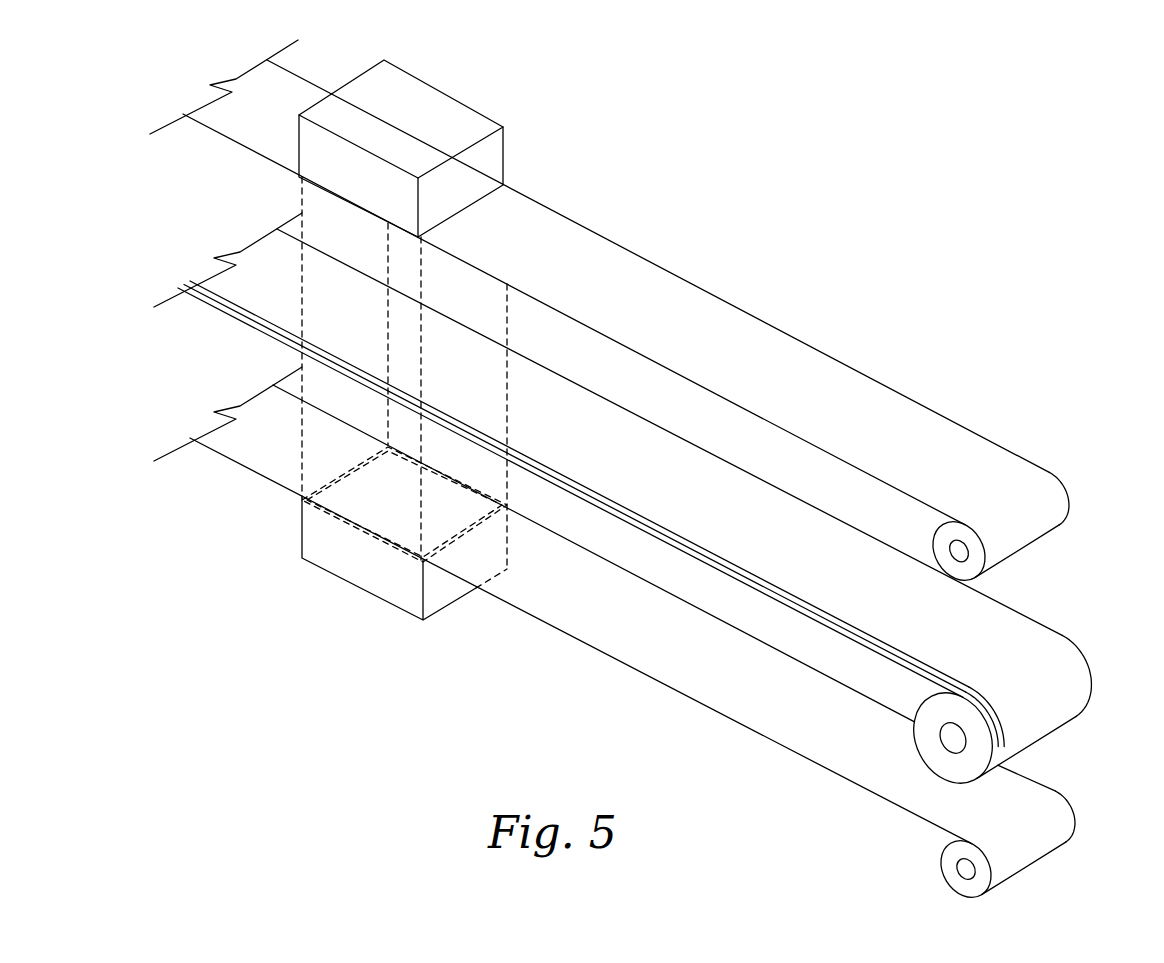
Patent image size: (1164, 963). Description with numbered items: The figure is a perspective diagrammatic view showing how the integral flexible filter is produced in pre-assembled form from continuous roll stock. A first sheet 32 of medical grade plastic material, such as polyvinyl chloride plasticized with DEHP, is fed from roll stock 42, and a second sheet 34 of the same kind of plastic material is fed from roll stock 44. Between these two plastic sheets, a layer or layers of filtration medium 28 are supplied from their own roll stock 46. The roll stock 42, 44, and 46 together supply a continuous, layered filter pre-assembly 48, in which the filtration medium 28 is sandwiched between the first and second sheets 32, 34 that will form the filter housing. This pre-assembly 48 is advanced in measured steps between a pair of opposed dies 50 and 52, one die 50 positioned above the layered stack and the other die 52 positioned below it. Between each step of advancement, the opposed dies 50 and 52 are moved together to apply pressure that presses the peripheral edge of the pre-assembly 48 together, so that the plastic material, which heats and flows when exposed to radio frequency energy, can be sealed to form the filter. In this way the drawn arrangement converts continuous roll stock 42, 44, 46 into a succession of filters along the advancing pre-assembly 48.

The filtration medium 28 is at (593, 443).
The first sheet 32 is at (790, 370).
The second sheet 34 is at (597, 622).
The roll stock 42 is at (1047, 512).
The roll stock 44 is at (947, 857).
The roll stock 46 is at (1067, 688).
The filter pre-assembly 48 is at (256, 217).
The die 50 is at (433, 135).
The die 52 is at (348, 548).